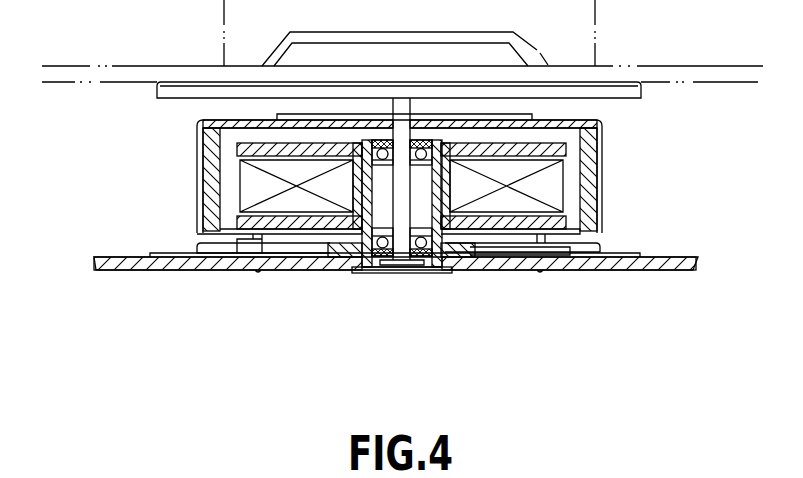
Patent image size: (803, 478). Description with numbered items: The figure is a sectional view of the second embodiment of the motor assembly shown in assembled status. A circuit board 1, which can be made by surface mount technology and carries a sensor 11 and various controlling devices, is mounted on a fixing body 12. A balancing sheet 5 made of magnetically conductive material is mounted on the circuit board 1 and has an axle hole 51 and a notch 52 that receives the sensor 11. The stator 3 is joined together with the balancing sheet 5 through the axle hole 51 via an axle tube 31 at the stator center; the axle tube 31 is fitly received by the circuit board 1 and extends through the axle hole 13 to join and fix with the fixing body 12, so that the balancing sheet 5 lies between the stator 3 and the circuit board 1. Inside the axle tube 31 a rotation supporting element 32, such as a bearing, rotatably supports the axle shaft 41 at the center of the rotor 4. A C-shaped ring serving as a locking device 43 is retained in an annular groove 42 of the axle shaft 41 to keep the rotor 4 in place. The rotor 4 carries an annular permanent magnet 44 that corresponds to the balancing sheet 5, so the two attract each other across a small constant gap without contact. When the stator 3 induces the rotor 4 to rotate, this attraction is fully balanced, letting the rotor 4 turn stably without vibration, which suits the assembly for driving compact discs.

The circuit board 1 is at (640, 253).
The stator 3 is at (573, 262).
The rotor 4 is at (602, 127).
The balancing sheet 5 is at (303, 258).
The sensor 11 is at (252, 250).
The fixing body 12 is at (678, 272).
The axle hole 13 is at (460, 272).
The axle tube 31 is at (362, 272).
The rotation supporting element 32 is at (425, 273).
The axle shaft 41 is at (350, 245).
The annular groove 42 is at (383, 274).
The locking device 43 is at (398, 261).
The permanent magnet 44 is at (587, 177).
The axle hole 51 is at (452, 258).
The notch 52 is at (595, 247).